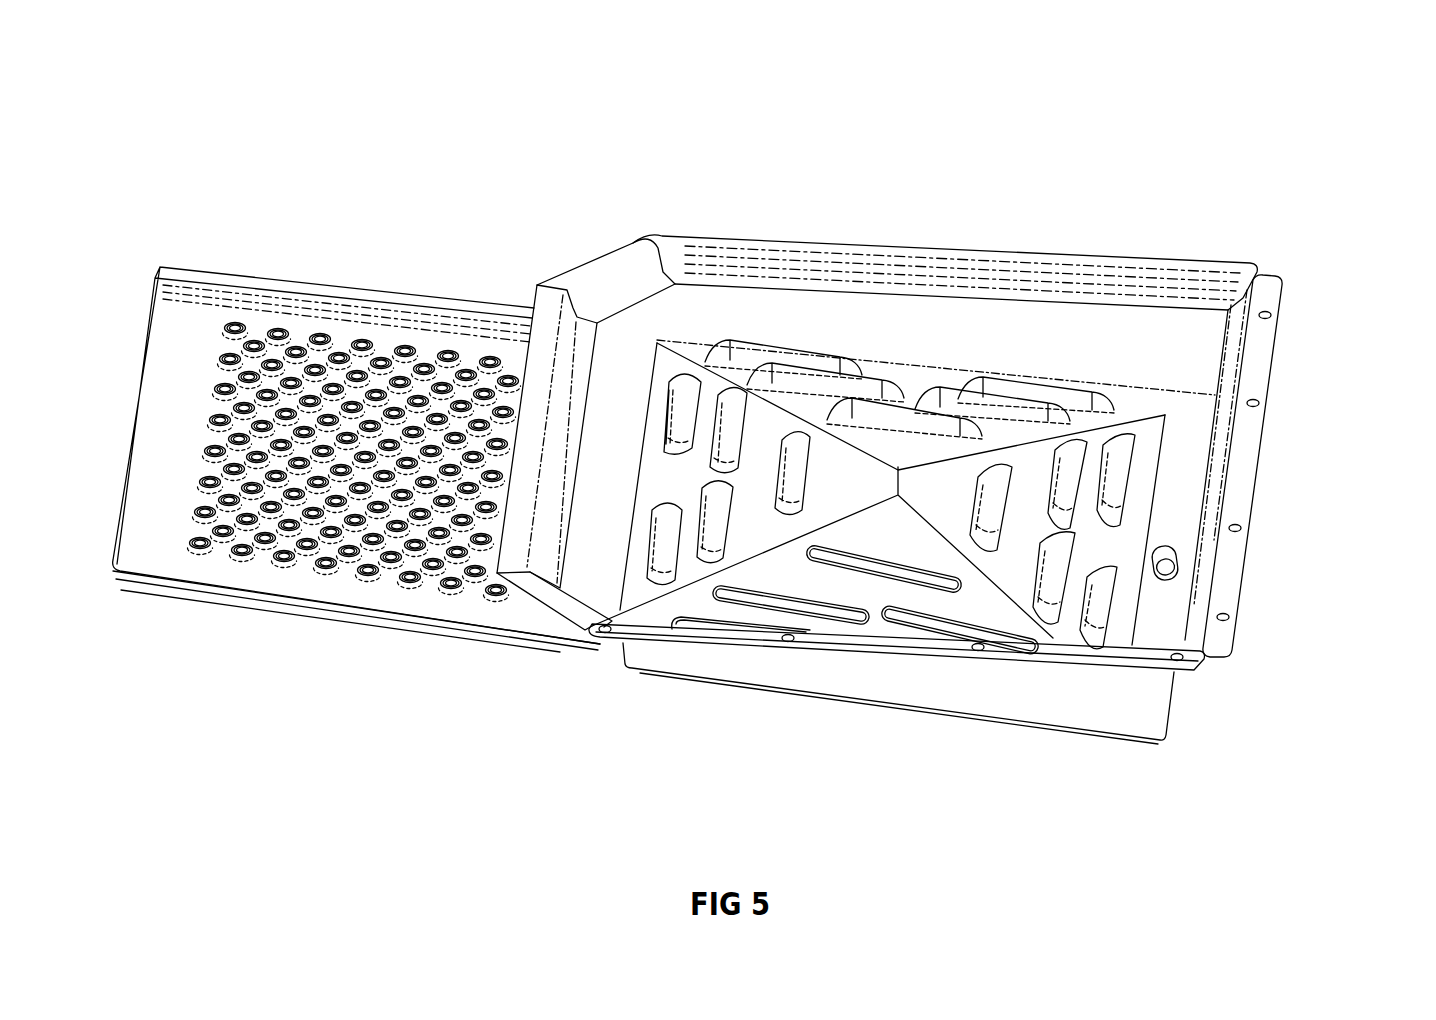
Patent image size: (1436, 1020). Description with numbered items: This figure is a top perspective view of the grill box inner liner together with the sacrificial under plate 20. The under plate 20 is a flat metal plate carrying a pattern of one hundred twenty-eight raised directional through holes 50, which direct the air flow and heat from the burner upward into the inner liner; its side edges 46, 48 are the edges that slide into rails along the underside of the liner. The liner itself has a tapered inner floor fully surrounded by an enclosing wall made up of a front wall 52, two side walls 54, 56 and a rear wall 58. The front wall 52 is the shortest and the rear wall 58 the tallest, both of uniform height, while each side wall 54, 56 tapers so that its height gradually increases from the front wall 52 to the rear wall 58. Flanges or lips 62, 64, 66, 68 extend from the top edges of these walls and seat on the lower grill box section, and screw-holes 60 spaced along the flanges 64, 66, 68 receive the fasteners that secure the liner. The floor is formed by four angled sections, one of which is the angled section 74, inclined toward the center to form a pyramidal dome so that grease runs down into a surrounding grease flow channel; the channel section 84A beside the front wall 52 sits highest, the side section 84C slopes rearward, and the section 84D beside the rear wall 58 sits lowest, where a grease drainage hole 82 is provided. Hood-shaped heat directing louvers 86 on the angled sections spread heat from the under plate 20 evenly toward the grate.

The sacrificial under plate 20 is at (398, 590).
The side edge of the under plate 46 is at (418, 607).
The side edge of the under plate 48 is at (332, 288).
The raised directional through holes 50 is at (235, 322).
The front wall 52 is at (572, 355).
The side wall 54 is at (1043, 330).
The side wall 56 is at (953, 688).
The rear wall 58 is at (1215, 468).
The screw-holes 60 is at (1232, 530).
The flange 62 is at (517, 553).
The flange 64 is at (957, 262).
The flange 66 is at (865, 638).
The flange 68 is at (1233, 507).
The angled section 74 is at (928, 538).
The grease drainage hole 82 is at (1170, 570).
The grease flow channel section 84A is at (608, 450).
The grease flow channel section 84C is at (898, 367).
The grease flow channel section 84D is at (1195, 433).
The heat directing louvers 86 is at (880, 562).